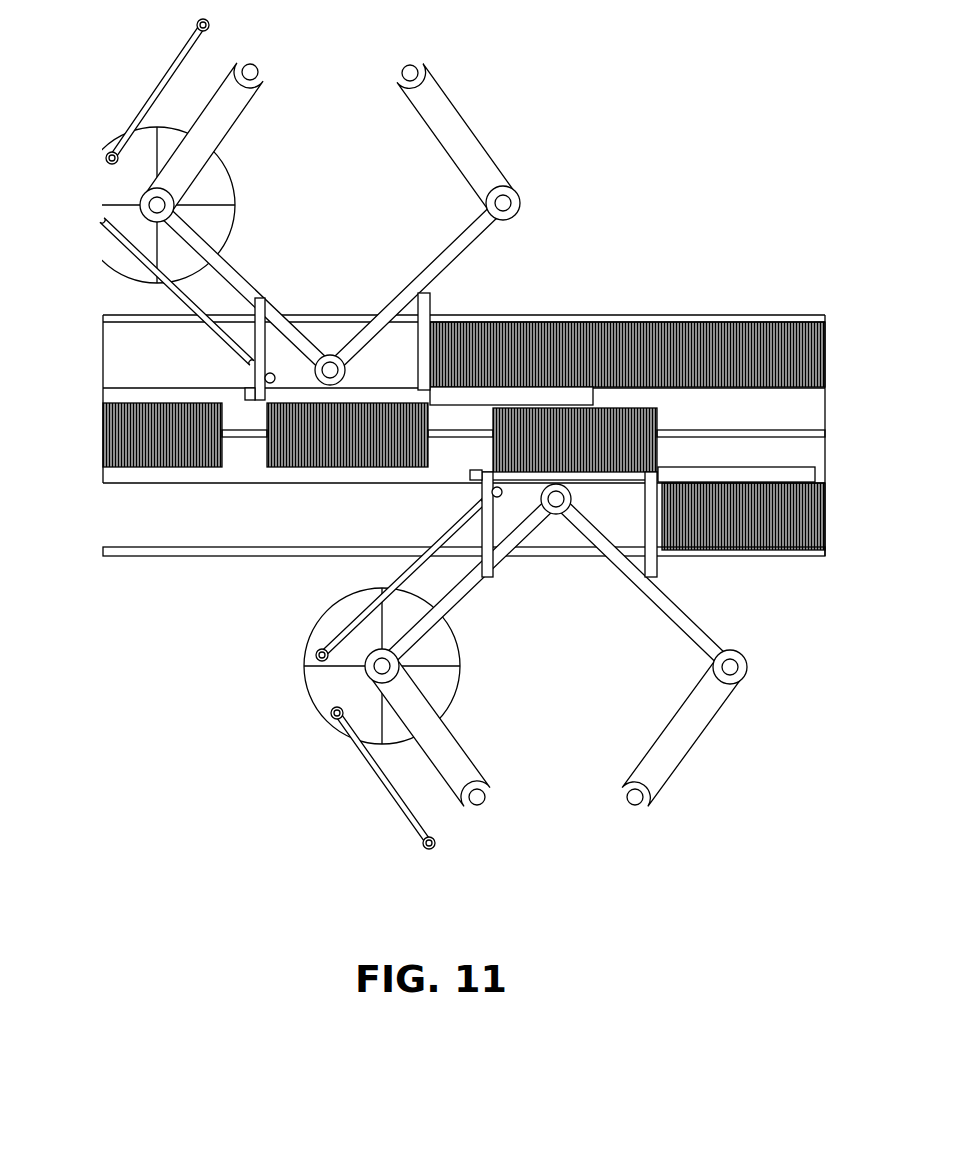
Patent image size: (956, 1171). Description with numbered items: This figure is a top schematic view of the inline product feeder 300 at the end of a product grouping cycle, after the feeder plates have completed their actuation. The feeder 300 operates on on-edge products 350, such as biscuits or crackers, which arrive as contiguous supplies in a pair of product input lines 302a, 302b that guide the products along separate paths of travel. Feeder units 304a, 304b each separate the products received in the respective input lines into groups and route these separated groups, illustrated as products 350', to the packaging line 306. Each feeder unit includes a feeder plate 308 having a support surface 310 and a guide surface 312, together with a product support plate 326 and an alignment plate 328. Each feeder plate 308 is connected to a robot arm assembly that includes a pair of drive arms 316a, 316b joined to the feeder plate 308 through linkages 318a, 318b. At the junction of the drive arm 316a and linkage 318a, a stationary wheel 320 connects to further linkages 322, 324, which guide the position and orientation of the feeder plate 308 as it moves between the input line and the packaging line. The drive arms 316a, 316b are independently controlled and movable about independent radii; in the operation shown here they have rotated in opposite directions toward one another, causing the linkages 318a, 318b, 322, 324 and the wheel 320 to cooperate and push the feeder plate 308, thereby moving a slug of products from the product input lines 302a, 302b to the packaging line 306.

The inline product feeder 300 is at (219, 912).
The product input line 302a is at (584, 312).
The product input line 302b is at (754, 562).
The feeder unit 304a is at (520, 88).
The feeder unit 304b is at (258, 762).
The packaging line 306 is at (247, 465).
The feeder plate 308 is at (390, 347).
The support surface 310 is at (431, 297).
The guide surface 312 is at (244, 392).
The drive arm 316a is at (253, 100).
The drive arm 316b is at (420, 120).
The linkage 318a is at (242, 267).
The linkage 318b is at (457, 240).
The stationary wheel 320 is at (217, 180).
The linkage 322 is at (183, 302).
The linkage 324 is at (160, 88).
The product support plate 326 is at (262, 308).
The alignment plate 328 is at (598, 400).
The products 350 is at (646, 429).
The separated group of products 350' is at (342, 461).